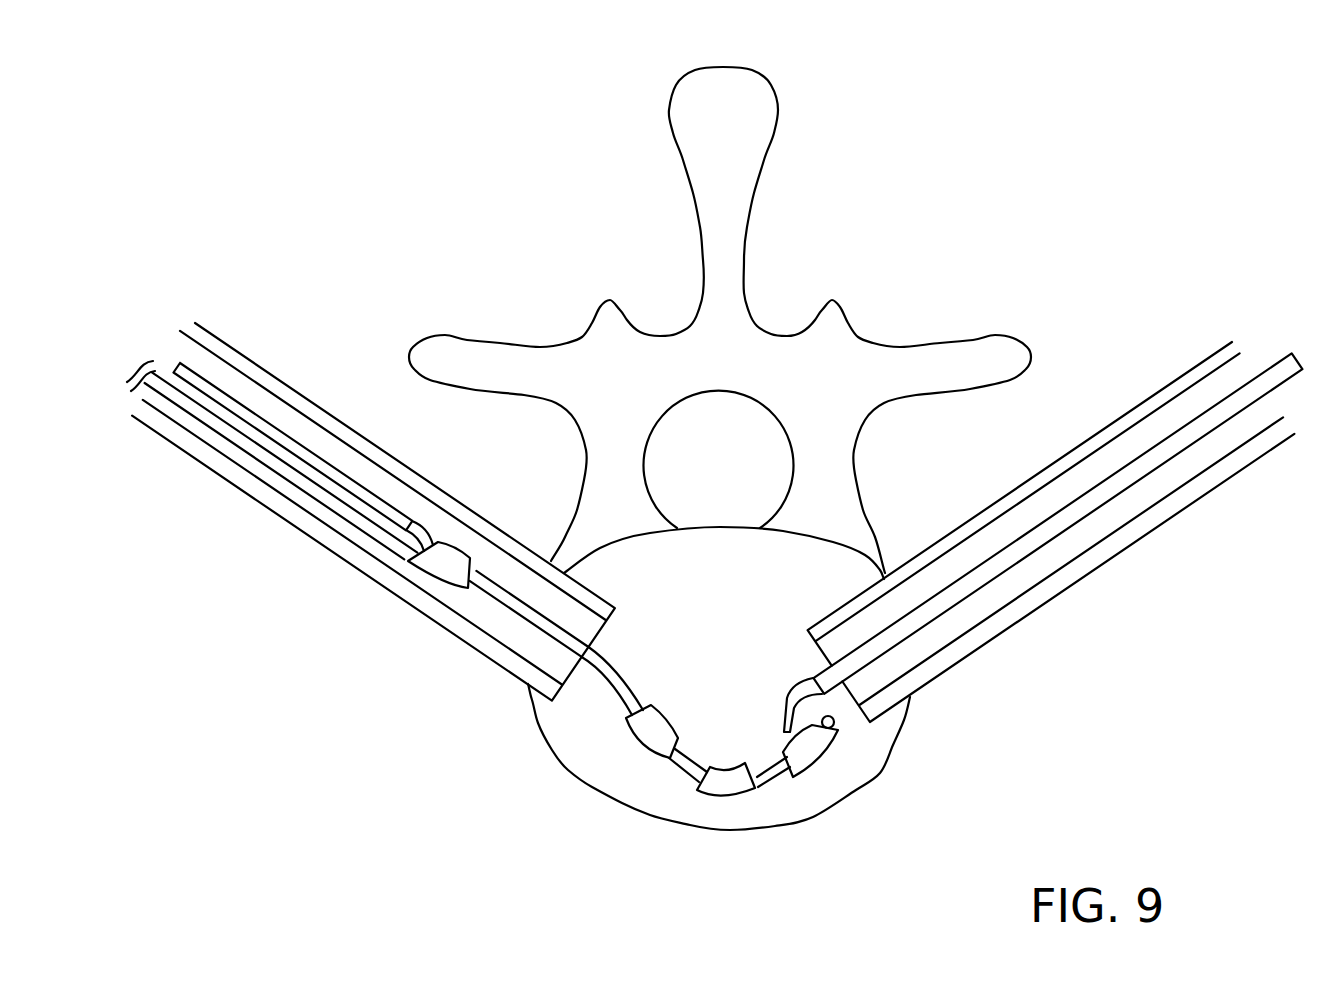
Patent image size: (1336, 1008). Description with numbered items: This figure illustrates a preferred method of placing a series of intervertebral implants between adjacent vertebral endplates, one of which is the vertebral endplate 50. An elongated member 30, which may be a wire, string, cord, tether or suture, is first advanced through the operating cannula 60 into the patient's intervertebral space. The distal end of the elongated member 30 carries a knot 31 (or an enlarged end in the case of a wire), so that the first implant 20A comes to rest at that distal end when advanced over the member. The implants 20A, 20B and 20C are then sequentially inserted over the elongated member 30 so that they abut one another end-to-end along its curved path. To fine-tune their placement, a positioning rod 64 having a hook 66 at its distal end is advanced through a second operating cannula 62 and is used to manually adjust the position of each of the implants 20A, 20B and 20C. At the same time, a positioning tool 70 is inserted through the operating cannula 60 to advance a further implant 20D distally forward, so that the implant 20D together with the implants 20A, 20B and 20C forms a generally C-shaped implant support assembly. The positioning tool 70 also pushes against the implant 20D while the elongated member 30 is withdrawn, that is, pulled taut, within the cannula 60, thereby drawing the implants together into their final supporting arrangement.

The intervertebral insert 20A is at (823, 750).
The intervertebral insert 20B is at (742, 782).
The intervertebral insert 20C is at (663, 746).
The implant 20D is at (443, 570).
The elongated member 30 is at (291, 474).
The knot 31 is at (837, 718).
The vertebral endplate 50 is at (597, 748).
The cannula 60 is at (469, 646).
The second operating cannula 62 is at (977, 650).
The positioning rod 64 is at (827, 667).
The hook 66 is at (793, 690).
The positioning tool 70 is at (303, 453).